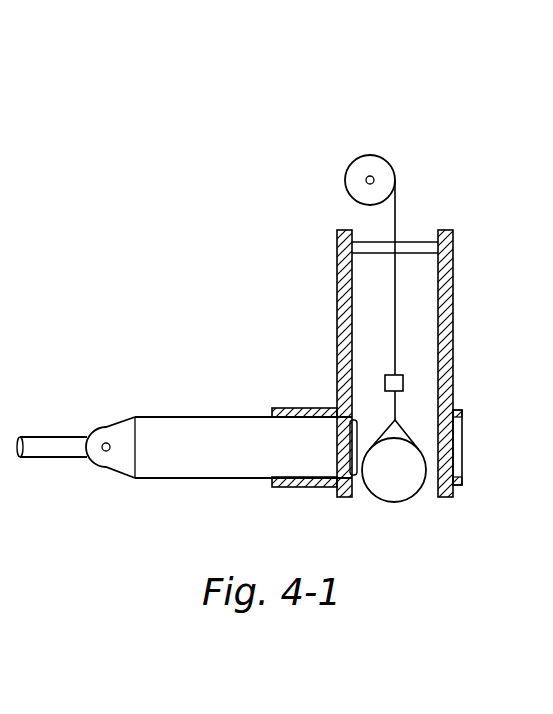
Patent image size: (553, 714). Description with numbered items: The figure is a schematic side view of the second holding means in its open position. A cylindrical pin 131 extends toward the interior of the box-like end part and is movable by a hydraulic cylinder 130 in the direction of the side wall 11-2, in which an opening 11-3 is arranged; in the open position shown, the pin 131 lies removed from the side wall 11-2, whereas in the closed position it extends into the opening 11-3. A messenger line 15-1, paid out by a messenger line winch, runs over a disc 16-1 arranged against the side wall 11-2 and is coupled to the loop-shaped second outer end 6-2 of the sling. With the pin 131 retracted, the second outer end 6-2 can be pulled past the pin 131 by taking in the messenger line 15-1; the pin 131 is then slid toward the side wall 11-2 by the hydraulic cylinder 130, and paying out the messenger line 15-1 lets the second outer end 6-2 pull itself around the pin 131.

The disc 16-1 is at (375, 165).
The messenger line 15-1 is at (395, 310).
The side wall 11-2 is at (445, 310).
The opening 11-3 is at (452, 447).
The cylindrical pin 131 is at (168, 447).
The hydraulic cylinder 130 is at (53, 445).
The second outer end 6-2 is at (393, 485).